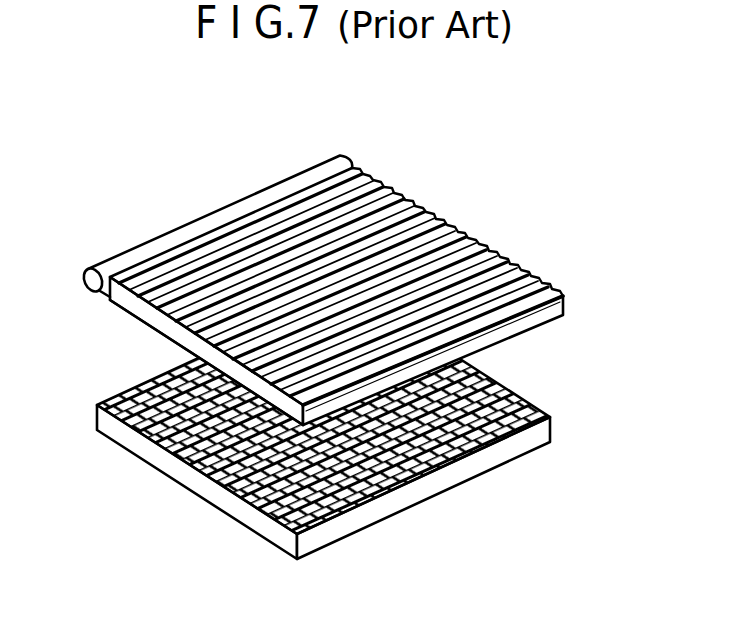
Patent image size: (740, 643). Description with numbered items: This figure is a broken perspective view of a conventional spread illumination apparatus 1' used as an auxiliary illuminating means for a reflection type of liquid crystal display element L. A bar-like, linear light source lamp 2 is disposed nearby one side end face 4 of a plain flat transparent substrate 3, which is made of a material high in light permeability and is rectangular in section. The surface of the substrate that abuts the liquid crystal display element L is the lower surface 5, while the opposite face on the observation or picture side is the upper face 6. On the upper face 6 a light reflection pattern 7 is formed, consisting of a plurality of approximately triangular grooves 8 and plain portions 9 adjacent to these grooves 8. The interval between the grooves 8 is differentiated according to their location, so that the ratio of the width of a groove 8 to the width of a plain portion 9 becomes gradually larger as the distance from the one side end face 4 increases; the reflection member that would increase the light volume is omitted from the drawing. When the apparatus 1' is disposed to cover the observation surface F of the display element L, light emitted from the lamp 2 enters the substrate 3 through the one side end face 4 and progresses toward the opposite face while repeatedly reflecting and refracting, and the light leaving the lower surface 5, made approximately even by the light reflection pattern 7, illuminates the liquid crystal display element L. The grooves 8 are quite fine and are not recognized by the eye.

The spread illumination apparatus 1' is at (324, 366).
The light source lamp 2 is at (193, 241).
The flat transparent substrate 3 is at (117, 309).
The one side end face 4 is at (104, 293).
The lower surface 5 is at (157, 334).
The upper face 6 is at (190, 287).
The light reflection pattern 7 is at (299, 366).
The grooves 8 is at (323, 436).
The plain portions 9 is at (299, 339).
The observation surface F is at (441, 467).
The reflection type liquid crystal display element L is at (372, 528).